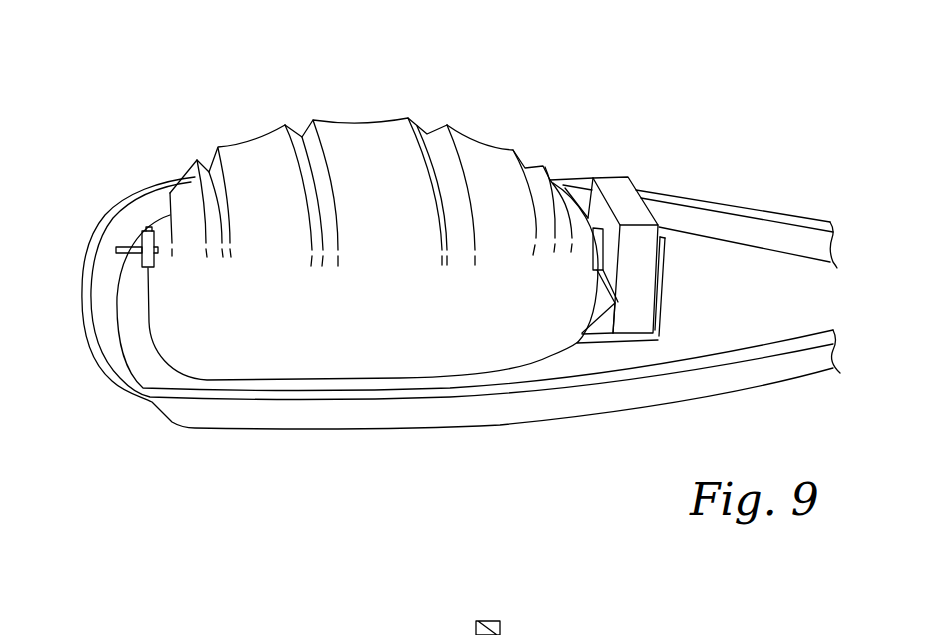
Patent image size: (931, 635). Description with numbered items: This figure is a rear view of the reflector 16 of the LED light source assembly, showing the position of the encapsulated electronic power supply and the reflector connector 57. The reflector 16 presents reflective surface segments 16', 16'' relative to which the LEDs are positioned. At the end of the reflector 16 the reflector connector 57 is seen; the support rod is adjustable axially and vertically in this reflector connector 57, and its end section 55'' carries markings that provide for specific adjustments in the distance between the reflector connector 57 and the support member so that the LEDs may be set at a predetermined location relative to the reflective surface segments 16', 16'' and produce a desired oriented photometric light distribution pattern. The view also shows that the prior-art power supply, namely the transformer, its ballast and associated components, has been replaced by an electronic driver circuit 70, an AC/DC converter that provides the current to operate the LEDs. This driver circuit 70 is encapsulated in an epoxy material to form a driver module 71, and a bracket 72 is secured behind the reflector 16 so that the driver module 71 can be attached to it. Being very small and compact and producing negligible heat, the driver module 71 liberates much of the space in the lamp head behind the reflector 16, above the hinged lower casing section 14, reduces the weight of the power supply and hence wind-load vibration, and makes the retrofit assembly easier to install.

The lower casing section 14 is at (448, 410).
The reflector 16 is at (380, 166).
The reflective surface segment 16' is at (532, 205).
The reflective surface segment 16'' is at (373, 236).
The electronic driver circuit 70 is at (624, 186).
The driver module 71 is at (637, 255).
The bracket 72 is at (663, 302).
The end section of the support rod 55'' is at (117, 197).
The reflector connector 57 is at (147, 263).